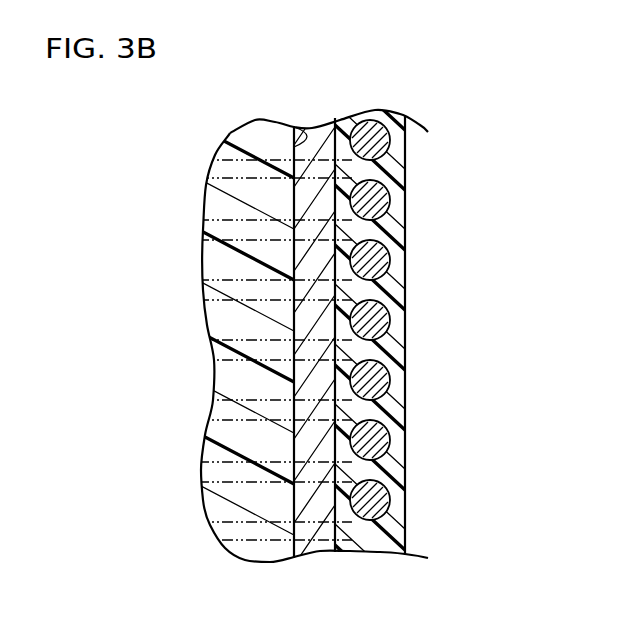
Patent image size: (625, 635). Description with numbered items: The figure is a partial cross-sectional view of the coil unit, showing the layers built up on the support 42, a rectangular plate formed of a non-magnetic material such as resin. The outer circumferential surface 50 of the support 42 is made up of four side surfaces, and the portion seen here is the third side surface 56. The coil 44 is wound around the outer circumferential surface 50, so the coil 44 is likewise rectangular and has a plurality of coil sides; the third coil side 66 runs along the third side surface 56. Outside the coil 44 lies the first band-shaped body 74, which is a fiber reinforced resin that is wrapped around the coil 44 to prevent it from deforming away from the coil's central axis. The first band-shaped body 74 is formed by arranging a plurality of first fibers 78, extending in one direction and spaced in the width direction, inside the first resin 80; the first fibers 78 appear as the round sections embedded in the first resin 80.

The support 42 is at (255, 532).
The coil 44 is at (319, 125).
The outer circumferential surface 50 is at (313, 128).
The third side surface 56 is at (297, 541).
The third coil side 66 is at (327, 233).
The first fiber 78 is at (372, 148).
The first resin 80 is at (390, 293).
The first band-shaped body 74 is at (410, 395).